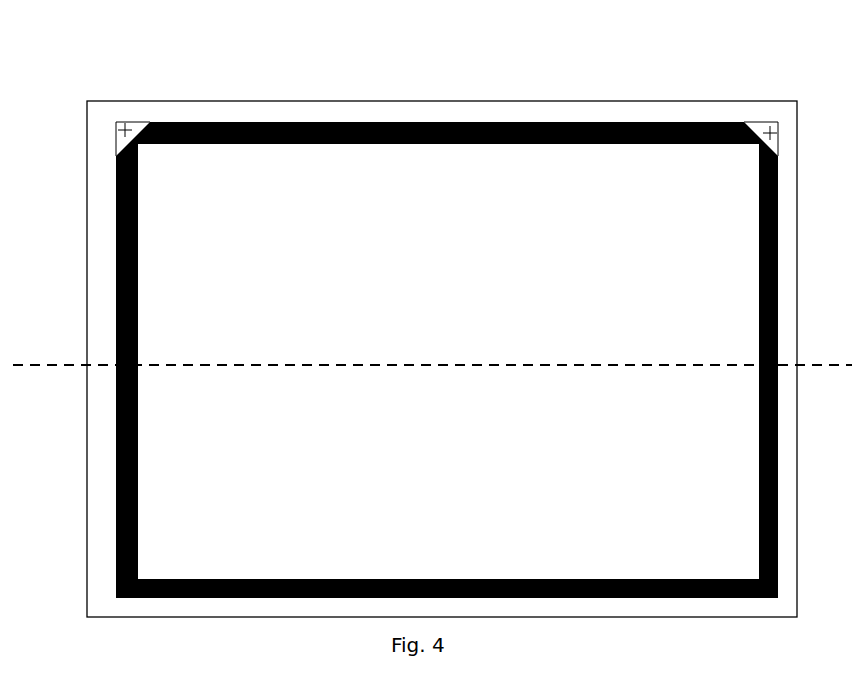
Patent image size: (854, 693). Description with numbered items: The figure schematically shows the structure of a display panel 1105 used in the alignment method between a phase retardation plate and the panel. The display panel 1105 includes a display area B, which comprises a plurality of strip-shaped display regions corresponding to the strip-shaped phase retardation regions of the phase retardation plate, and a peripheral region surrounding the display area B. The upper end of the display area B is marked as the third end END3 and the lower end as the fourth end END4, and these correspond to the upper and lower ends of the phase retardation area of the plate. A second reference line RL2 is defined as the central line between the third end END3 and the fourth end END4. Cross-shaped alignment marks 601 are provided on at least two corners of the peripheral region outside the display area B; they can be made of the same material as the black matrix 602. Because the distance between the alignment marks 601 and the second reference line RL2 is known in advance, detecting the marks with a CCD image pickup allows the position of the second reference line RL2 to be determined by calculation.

The display panel 1105 is at (442, 328).
The alignment marks 601 is at (766, 133).
The black matrix 602 is at (778, 162).
The third end END3 is at (380, 146).
The fourth end END4 is at (360, 578).
The display area B is at (448, 361).
The second reference line RL2 is at (432, 382).